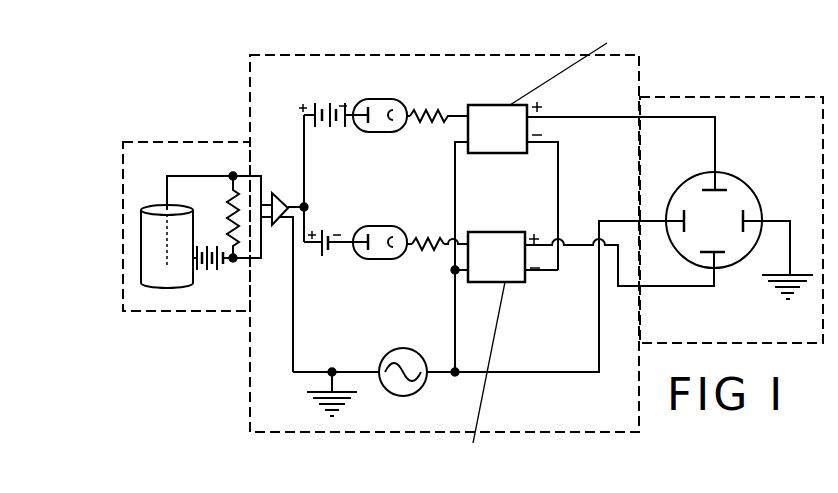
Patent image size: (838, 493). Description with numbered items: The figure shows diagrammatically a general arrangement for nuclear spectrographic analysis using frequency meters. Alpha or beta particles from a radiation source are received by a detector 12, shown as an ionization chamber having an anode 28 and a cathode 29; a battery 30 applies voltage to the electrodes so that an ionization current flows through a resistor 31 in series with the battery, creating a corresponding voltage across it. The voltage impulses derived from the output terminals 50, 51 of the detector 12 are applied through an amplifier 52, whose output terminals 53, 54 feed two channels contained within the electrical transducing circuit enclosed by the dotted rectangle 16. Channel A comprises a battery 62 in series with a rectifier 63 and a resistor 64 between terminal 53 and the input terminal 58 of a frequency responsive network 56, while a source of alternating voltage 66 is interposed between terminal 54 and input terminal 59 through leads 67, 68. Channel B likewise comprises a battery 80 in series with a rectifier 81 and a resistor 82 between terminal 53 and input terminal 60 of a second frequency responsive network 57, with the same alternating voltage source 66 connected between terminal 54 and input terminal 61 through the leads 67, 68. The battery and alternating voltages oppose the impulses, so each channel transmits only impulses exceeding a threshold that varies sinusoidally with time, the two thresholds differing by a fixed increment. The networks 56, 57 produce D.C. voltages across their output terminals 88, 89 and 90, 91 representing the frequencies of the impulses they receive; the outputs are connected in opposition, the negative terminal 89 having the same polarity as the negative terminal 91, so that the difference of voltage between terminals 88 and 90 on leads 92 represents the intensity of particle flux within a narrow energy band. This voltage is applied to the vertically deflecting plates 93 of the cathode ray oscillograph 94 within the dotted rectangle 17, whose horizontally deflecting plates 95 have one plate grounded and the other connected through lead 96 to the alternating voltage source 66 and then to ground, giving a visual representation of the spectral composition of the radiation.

The detector 12 is at (165, 142).
The dotted rectangle 16 is at (305, 55).
The dotted rectangle 17 is at (750, 97).
The anode 28 is at (167, 185).
The cathode 29 is at (159, 288).
The battery 30 is at (217, 273).
The resistor 31 is at (232, 190).
The output terminal 50 is at (233, 175).
The output terminal 51 is at (236, 267).
The amplifier 52 is at (282, 202).
The output terminal 53 is at (310, 201).
The output terminal 54 is at (295, 268).
The frequency responsive network 56 is at (619, 90).
The frequency responsive network 57 is at (559, 347).
The input terminal 58 is at (458, 114).
The input terminal 59 is at (460, 145).
The input terminal 60 is at (459, 242).
The input terminal 61 is at (453, 272).
The battery 62 is at (325, 105).
The rectifier 63 is at (382, 98).
The resistor 64 is at (430, 105).
The source of alternating voltage 66 is at (395, 352).
The lead 67 is at (355, 370).
The lead 68 is at (457, 338).
The battery 80 is at (326, 229).
The rectifier 81 is at (385, 226).
The resistor 82 is at (418, 233).
The output terminal 88 is at (556, 116).
The negative terminal 89 is at (540, 145).
The output terminal 90 is at (546, 238).
The negative terminal 91 is at (540, 271).
The leads 92 is at (594, 118).
The vertically deflecting plates 93 is at (708, 193).
The cathode ray oscillograph 94 is at (750, 185).
The horizontally deflecting plates 95 is at (688, 212).
The lead 96 is at (525, 373).